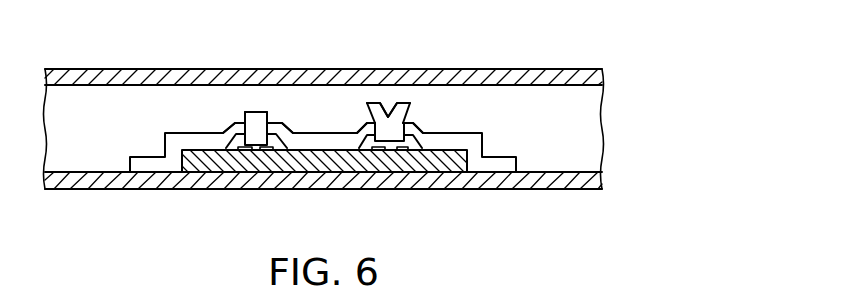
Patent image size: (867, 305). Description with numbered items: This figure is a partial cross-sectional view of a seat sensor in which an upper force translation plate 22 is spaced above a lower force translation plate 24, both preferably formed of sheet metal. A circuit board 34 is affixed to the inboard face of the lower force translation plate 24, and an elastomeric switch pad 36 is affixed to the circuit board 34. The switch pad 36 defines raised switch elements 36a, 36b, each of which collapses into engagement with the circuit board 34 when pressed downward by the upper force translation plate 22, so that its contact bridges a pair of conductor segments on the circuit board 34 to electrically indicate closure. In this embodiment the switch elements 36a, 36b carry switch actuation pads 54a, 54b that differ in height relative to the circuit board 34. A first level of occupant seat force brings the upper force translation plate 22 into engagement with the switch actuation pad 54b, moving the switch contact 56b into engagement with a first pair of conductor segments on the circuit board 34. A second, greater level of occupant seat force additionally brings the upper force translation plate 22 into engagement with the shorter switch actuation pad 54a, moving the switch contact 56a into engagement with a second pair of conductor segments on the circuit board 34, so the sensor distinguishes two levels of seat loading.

The upper force translation plate 22 is at (508, 70).
The lower force translation plate 24 is at (548, 190).
The circuit board 34 is at (318, 167).
The elastomeric switch pad 36 is at (149, 157).
The switch element 36a is at (227, 126).
The switch element 36b is at (421, 124).
The switch actuation pad 54a is at (253, 112).
The switch actuation pad 54b is at (379, 105).
The switch contact 56a is at (256, 150).
The switch contact 56b is at (394, 151).